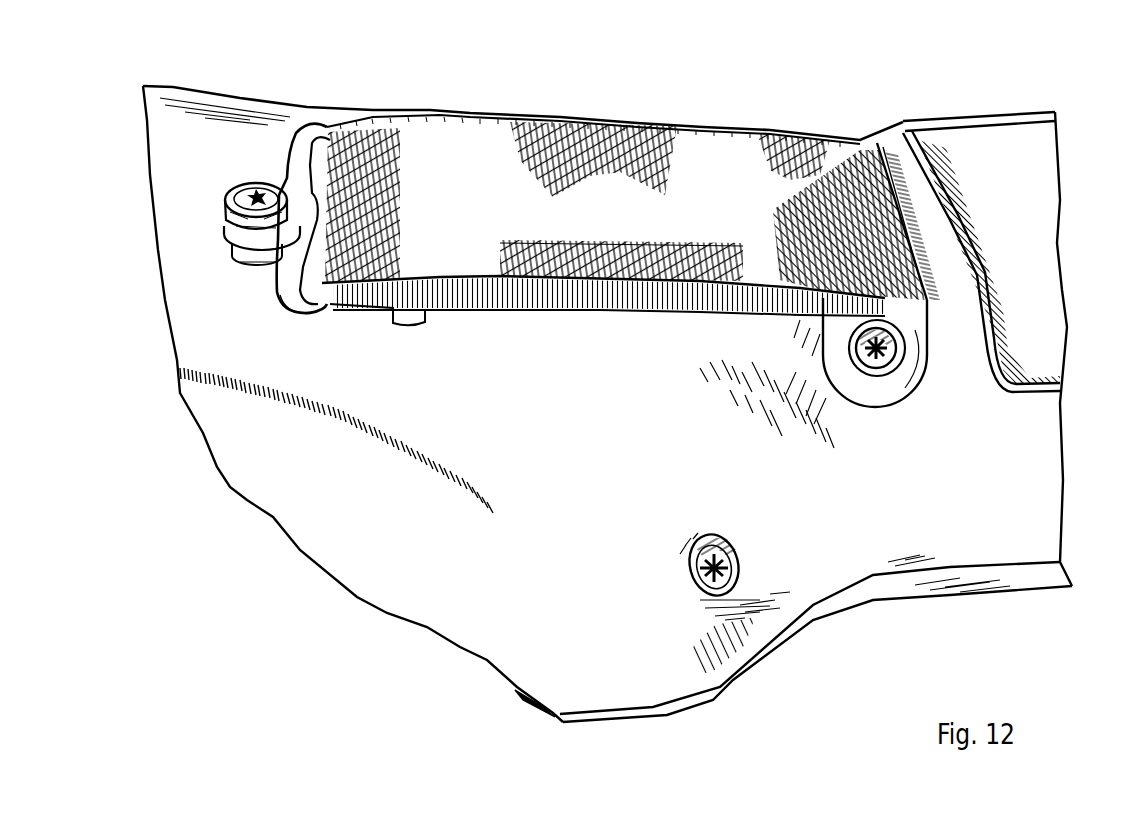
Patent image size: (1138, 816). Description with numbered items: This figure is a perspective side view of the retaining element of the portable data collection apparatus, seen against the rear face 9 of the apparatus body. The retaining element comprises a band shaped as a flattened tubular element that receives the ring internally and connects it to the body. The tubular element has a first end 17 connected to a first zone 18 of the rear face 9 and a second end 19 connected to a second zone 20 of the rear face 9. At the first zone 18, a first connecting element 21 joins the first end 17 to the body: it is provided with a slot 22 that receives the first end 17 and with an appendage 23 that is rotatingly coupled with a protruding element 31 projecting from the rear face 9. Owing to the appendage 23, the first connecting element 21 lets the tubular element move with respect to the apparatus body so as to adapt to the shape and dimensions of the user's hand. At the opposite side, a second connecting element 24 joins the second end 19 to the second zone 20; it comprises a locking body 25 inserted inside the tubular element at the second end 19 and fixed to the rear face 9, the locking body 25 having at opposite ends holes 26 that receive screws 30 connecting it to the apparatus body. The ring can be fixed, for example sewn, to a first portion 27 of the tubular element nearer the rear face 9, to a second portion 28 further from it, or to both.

The rear face 9 is at (508, 368).
The first end 17 is at (372, 145).
The first zone 18 is at (249, 166).
The second end 19 is at (830, 186).
The second zone 20 is at (950, 321).
The first connecting element 21 is at (316, 108).
The slot 22 is at (322, 345).
The appendage 23 is at (257, 247).
The second connecting element 24 is at (800, 402).
The locking body 25 is at (897, 383).
The holes 26 is at (898, 326).
The first portion 27 is at (688, 312).
The second portion 28 is at (603, 262).
The screws 30 is at (875, 370).
The protruding element 31 is at (233, 217).